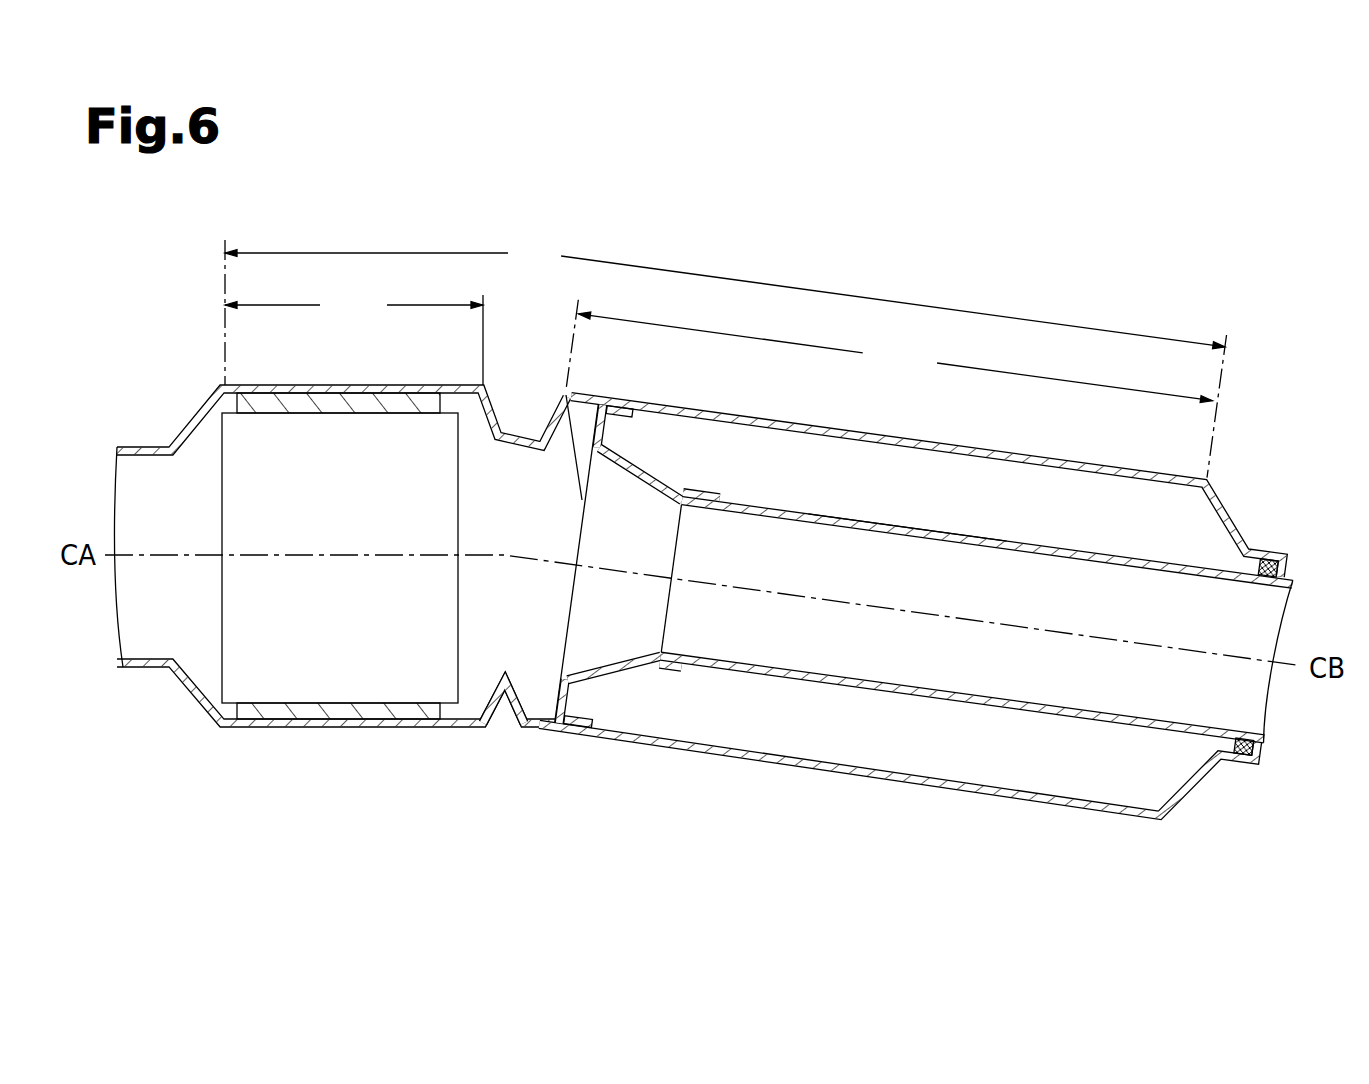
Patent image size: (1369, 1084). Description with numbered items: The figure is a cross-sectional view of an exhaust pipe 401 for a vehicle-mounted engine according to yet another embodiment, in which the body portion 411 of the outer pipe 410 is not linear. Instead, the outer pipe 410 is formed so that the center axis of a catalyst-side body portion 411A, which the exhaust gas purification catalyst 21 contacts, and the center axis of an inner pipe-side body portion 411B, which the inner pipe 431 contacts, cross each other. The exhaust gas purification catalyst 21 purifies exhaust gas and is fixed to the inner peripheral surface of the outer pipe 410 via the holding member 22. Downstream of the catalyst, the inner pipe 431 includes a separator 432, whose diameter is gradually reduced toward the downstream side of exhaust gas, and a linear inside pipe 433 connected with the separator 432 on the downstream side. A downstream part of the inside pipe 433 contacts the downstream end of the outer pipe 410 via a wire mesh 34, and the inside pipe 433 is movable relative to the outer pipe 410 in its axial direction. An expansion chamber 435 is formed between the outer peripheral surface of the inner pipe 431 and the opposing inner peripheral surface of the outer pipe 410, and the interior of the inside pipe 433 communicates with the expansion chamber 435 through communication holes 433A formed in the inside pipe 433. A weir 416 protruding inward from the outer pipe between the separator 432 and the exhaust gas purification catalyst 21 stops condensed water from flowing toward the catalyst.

The exhaust pipe 401 is at (603, 815).
The exhaust gas purification catalyst 21 is at (459, 621).
The holding member 22 is at (447, 405).
The weir 416 is at (505, 700).
The body portion 411 is at (726, 357).
The catalyst-side body portion 411A is at (354, 337).
The inner pipe-side body portion 411B is at (890, 387).
The outer pipe 410 is at (958, 446).
The inner pipe 431 is at (601, 563).
The separator 432 is at (619, 460).
The inside pipe 433 is at (591, 499).
The communication holes 433A is at (858, 528).
The expansion chamber 435 is at (912, 514).
The wire mesh 34 is at (1245, 734).